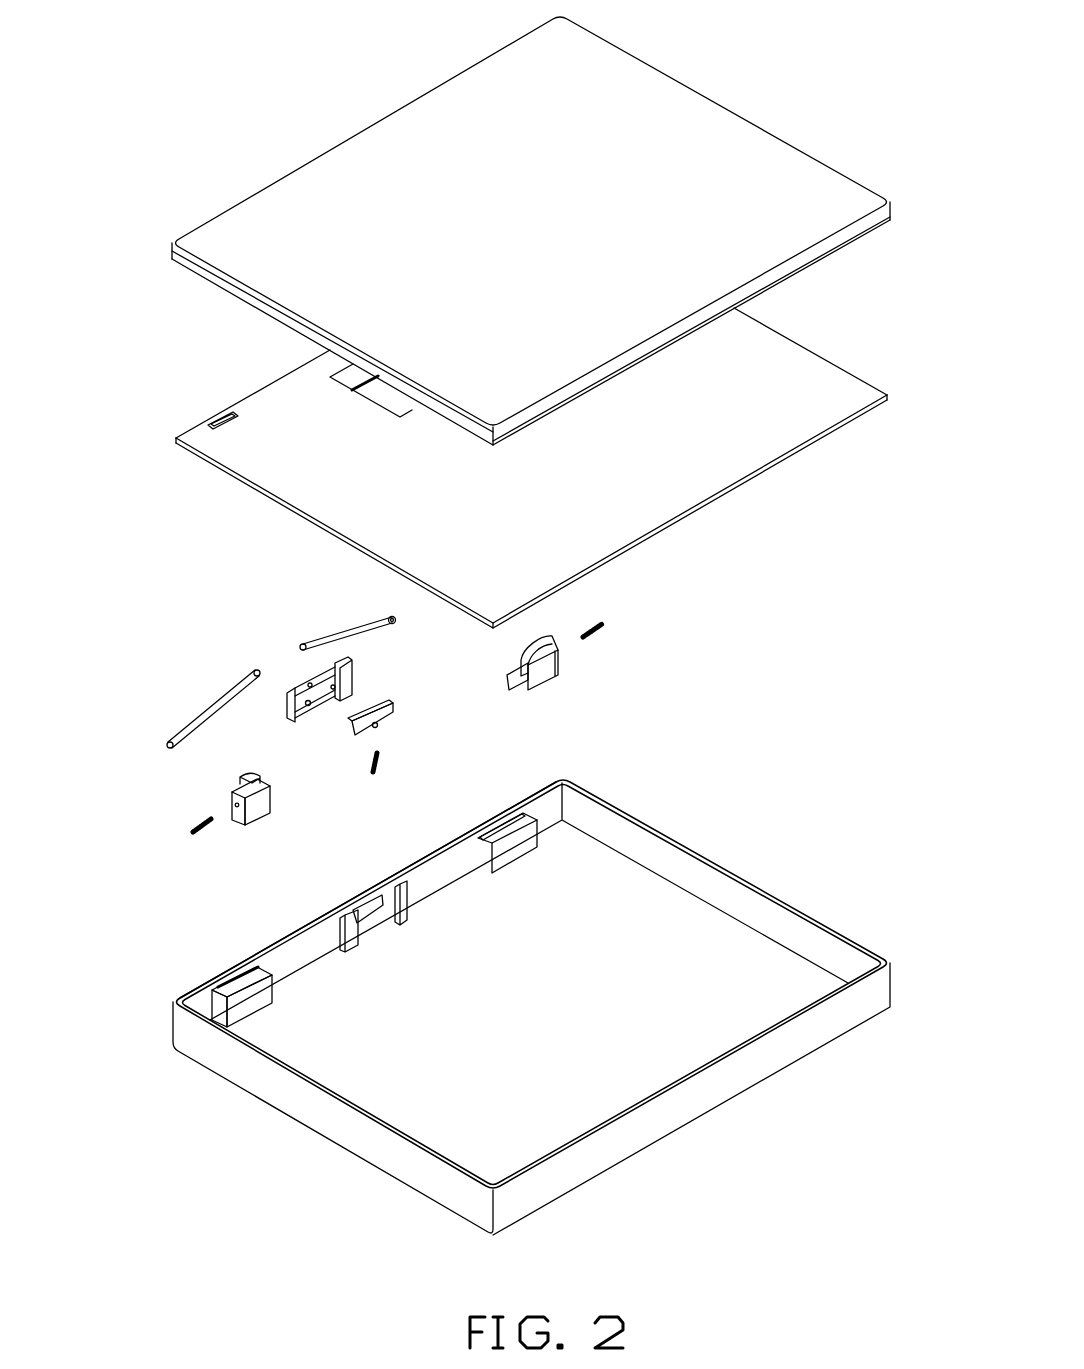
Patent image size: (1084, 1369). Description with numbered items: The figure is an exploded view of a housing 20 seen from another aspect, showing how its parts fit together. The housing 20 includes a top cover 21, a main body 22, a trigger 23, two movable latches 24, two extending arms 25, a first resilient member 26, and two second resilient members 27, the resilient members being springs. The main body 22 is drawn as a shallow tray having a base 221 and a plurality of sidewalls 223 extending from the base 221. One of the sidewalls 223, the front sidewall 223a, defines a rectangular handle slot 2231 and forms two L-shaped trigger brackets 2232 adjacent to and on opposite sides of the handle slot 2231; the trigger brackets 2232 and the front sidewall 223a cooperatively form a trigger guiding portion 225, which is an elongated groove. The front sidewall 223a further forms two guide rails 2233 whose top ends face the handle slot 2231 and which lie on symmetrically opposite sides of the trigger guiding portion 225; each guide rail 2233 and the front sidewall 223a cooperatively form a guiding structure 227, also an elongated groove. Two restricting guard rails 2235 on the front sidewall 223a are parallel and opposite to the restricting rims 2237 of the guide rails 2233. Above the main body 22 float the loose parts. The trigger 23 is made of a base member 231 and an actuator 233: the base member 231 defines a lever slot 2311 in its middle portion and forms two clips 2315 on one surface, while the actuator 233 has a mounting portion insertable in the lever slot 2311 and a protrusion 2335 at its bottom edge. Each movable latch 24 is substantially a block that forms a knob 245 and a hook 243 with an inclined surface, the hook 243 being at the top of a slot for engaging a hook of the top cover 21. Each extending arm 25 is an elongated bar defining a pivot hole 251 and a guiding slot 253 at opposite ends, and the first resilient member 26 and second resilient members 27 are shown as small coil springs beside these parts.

The housing 20 is at (433, 30).
The top cover 21 is at (773, 155).
The main body 22 is at (501, 980).
The base 221 is at (662, 925).
The sidewalls 223 is at (338, 1117).
The front sidewall 223a is at (507, 823).
The trigger guiding portion 225 is at (386, 932).
The guiding structure 227 is at (192, 958).
The handle slot 2231 is at (367, 908).
The trigger brackets 2232 is at (397, 882).
The guide rails 2233 is at (190, 962).
The restricting guard rails 2235 is at (503, 827).
The restricting rims 2237 is at (480, 799).
The trigger 23 is at (384, 696).
The base member 231 is at (351, 700).
The lever slot 2311 is at (313, 678).
The clips 2315 is at (310, 708).
The actuator 233 is at (408, 735).
The protrusion 2335 is at (375, 730).
The movable latches 24 is at (224, 817).
The hook 243 is at (245, 782).
The knob 245 is at (233, 803).
The extending arms 25 is at (210, 733).
The pivot hole 251 is at (258, 677).
The guiding slot 253 is at (182, 748).
The first resilient member 26 is at (375, 770).
The second resilient members 27 is at (593, 632).